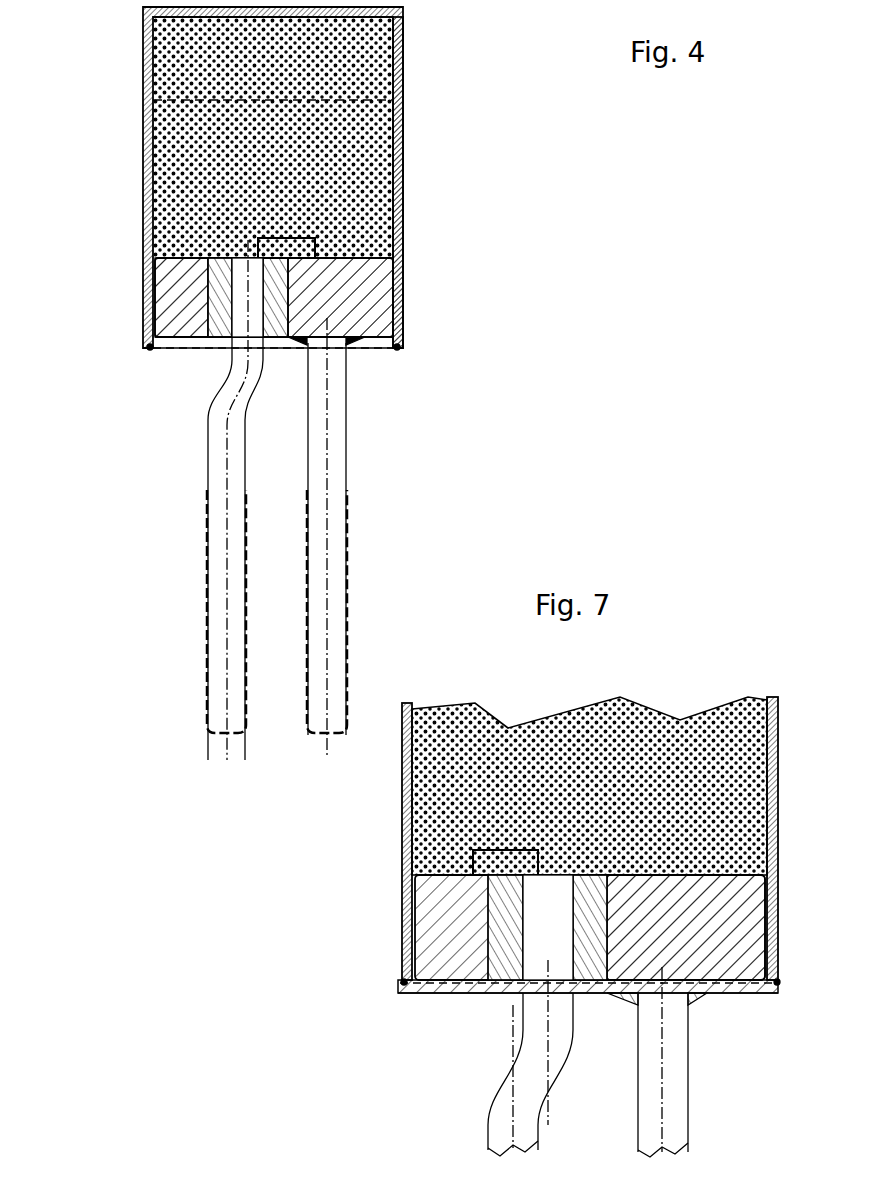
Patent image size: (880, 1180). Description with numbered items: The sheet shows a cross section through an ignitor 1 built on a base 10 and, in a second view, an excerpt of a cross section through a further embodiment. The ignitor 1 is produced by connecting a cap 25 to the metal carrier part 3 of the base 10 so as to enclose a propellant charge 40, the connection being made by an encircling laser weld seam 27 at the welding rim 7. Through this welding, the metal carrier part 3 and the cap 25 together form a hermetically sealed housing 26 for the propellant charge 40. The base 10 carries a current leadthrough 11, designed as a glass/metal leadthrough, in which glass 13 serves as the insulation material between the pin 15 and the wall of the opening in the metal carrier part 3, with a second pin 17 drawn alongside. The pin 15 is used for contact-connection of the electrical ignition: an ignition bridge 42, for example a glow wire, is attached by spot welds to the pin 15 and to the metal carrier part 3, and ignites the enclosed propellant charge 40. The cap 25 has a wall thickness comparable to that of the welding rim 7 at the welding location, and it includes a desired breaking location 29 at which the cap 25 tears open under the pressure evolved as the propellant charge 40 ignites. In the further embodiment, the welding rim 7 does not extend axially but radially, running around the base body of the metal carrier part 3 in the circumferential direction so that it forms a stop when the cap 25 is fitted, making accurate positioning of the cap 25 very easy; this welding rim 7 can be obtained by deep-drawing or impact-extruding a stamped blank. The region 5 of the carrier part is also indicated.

In FIG. 4, the ignitor 1 is at (596, 202).
In FIG. 7, the ignitor 1 is at (825, 911).
In FIG. 4, the metal carrier part 3 is at (155, 258).
In FIG. 7, the metal carrier part 3 is at (703, 872).
In FIG. 4, the header body 5 is at (368, 305).
In FIG. 7, the header body 5 is at (448, 933).
In FIG. 4, the welding rim 7 is at (393, 352).
In FIG. 7, the welding rim 7 is at (770, 993).
In FIG. 4, the base 10 is at (376, 455).
In FIG. 7, the base 10 is at (605, 1033).
In FIG. 4, the current leadthrough 11 is at (202, 347).
In FIG. 7, the current leadthrough 11 is at (512, 993).
In FIG. 4, the glass 13 is at (207, 285).
In FIG. 7, the glass 13 is at (413, 995).
In FIG. 4, the pin 15 is at (208, 587).
In FIG. 7, the pin 15 is at (437, 1145).
In FIG. 4, the second connecting lead 17 is at (342, 552).
In FIG. 7, the second connecting lead 17 is at (663, 1062).
In FIG. 4, the cap 25 is at (405, 193).
In FIG. 7, the cap 25 is at (403, 895).
In FIG. 4, the housing 26 is at (143, 133).
In FIG. 4, the laser weld seam 27 is at (398, 350).
In FIG. 7, the laser weld seam 27 is at (778, 983).
In FIG. 4, the desired breaking location 29 is at (398, 99).
In FIG. 4, the propellant charge 40 is at (368, 131).
In FIG. 7, the propellant charge 40 is at (435, 785).
In FIG. 4, the ignition bridge 42 is at (258, 238).
In FIG. 7, the ignition bridge 42 is at (473, 853).